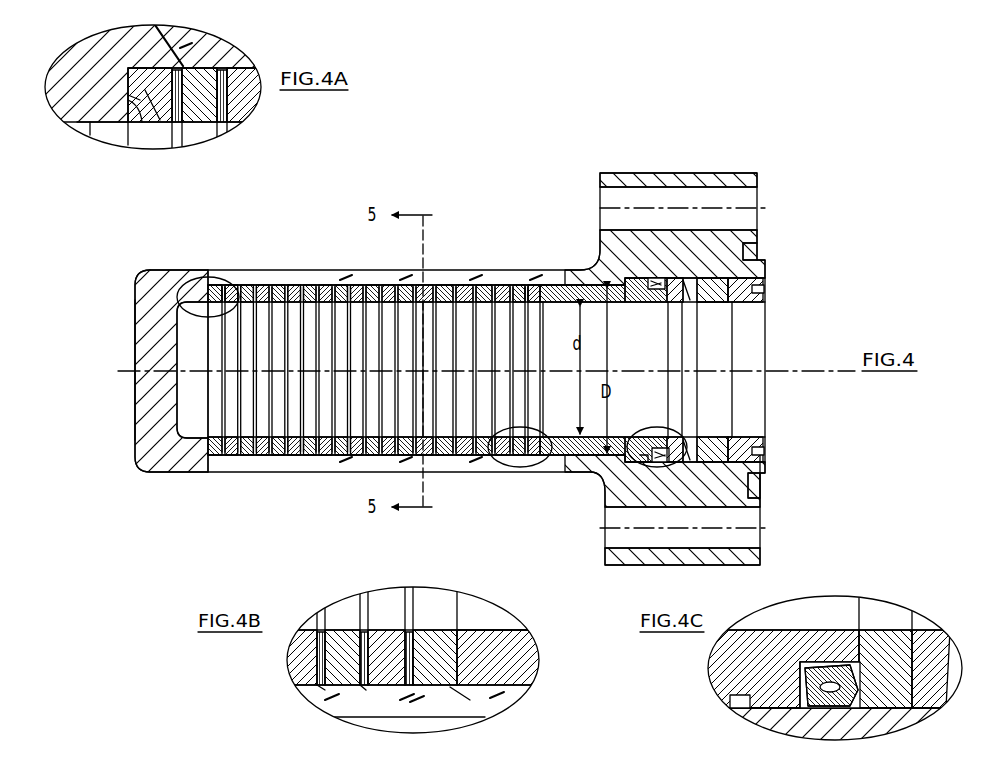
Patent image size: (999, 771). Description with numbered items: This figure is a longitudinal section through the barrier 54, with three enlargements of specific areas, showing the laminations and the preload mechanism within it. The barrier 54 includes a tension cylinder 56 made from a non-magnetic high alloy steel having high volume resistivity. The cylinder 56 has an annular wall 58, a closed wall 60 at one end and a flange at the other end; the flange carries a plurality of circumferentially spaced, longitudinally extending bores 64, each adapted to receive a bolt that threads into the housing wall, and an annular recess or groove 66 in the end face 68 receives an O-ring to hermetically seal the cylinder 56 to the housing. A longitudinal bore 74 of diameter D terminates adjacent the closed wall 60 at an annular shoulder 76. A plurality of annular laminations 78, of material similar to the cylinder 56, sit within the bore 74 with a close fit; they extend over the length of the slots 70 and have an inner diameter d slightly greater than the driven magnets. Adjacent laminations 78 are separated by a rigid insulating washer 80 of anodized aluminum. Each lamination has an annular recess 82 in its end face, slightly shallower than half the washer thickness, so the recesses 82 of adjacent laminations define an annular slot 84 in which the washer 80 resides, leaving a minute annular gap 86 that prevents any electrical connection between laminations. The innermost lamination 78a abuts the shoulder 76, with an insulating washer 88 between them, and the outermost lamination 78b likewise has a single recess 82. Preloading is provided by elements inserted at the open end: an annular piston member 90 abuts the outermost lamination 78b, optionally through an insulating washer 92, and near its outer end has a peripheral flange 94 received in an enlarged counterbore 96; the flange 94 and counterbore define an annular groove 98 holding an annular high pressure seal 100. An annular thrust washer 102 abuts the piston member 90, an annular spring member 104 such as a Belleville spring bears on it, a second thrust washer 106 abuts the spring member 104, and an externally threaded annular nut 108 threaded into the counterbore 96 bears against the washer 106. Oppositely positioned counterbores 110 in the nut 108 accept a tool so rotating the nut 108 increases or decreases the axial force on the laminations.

In FIG. 4, the barrier 54 is at (137, 445).
In FIG. 4, the tension cylinder 56 is at (293, 268).
In FIG. 4A, the tension cylinder 56 is at (70, 108).
In FIG. 4, the annular wall 58 is at (205, 458).
In FIG. 4A, the annular wall 58 is at (92, 118).
In FIG. 4C, the annular wall 58 is at (839, 724).
In FIG. 4, the closed wall 60 is at (137, 353).
In FIG. 4, the bores 64 is at (745, 537).
In FIG. 4, the annular recess or groove 66 is at (758, 252).
In FIG. 4, the end face 68 is at (762, 482).
In FIG. 4, the slots 70 is at (378, 275).
In FIG. 4A, the slots 70 is at (215, 62).
In FIG. 4B, the slots 70 is at (498, 702).
In FIG. 4, the bore 74 is at (456, 290).
In FIG. 4, the annular shoulder 76 is at (207, 287).
In FIG. 4A, the annular shoulder 76 is at (135, 122).
In FIG. 4, the annular laminations 78 is at (291, 457).
In FIG. 4A, the annular laminations 78 is at (232, 98).
In FIG. 4, the innermost lamination 78a is at (222, 286).
In FIG. 4A, the innermost lamination 78a is at (158, 122).
In FIG. 4, the outermost lamination 78b is at (526, 286).
In FIG. 4B, the outermost lamination 78b is at (452, 688).
In FIG. 4, the insulating washer 80 is at (343, 457).
In FIG. 4A, the insulating washer 80 is at (222, 116).
In FIG. 4B, the insulating washer 80 is at (362, 635).
In FIG. 4B, the annular recess 82 is at (320, 654).
In FIG. 4B, the annular slot 84 is at (352, 688).
In FIG. 4B, the annular gap 86 is at (322, 686).
In FIG. 4A, the insulating washer 88 is at (144, 125).
In FIG. 4, the annular piston member 90 is at (532, 458).
In FIG. 4B, the annular piston member 90 is at (513, 648).
In FIG. 4C, the annular piston member 90 is at (835, 637).
In FIG. 4, the insulating washer 92 is at (543, 360).
In FIG. 4B, the insulating washer 92 is at (458, 618).
In FIG. 4, the peripheral flange 94 is at (632, 470).
In FIG. 4C, the peripheral flange 94 is at (768, 700).
In FIG. 4, the enlarged counterbore 96 is at (650, 456).
In FIG. 4C, the enlarged counterbore 96 is at (730, 705).
In FIG. 4, the annular recess or groove 98 is at (656, 280).
In FIG. 4C, the annular recess or groove 98 is at (860, 702).
In FIG. 4, the annular high pressure seal 100 is at (660, 455).
In FIG. 4C, the annular high pressure seal 100 is at (800, 668).
In FIG. 4, the annular thrust washer 102 is at (697, 437).
In FIG. 4C, the annular thrust washer 102 is at (892, 664).
In FIG. 4, the annular spring member 104 is at (700, 447).
In FIG. 4C, the annular spring member 104 is at (930, 650).
In FIG. 4, the second thrust washer 106 is at (720, 301).
In FIG. 4, the externally threaded annular nut 108 is at (766, 294).
In FIG. 4, the counterbores 110 is at (764, 289).